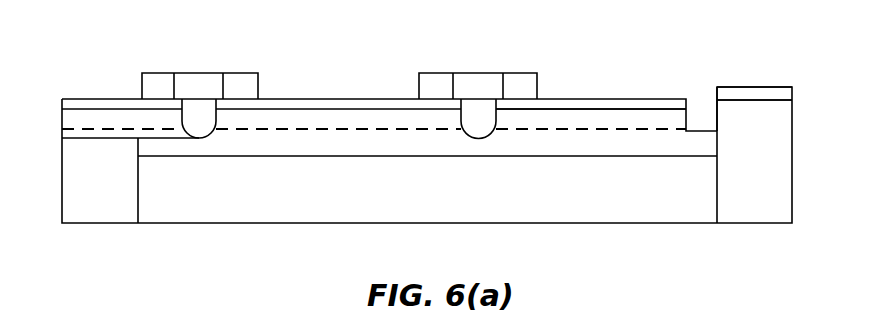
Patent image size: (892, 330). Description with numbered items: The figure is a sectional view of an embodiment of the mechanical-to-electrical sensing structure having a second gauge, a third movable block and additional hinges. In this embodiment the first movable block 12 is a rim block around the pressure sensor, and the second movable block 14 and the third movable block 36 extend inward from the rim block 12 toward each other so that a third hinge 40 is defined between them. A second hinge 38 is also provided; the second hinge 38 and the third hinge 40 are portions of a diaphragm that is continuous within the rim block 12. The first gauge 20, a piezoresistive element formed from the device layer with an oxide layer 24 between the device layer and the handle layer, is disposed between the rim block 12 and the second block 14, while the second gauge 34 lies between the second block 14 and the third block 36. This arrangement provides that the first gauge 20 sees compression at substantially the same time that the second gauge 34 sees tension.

The first movable block 12 is at (114, 193).
The second movable block 14 is at (292, 120).
The first gauge 20 is at (198, 80).
The oxide layer 24 is at (108, 103).
The second gauge 34 is at (477, 82).
The third movable block 36 is at (577, 118).
The second hinge 38 is at (702, 130).
The third hinge 40 is at (477, 128).